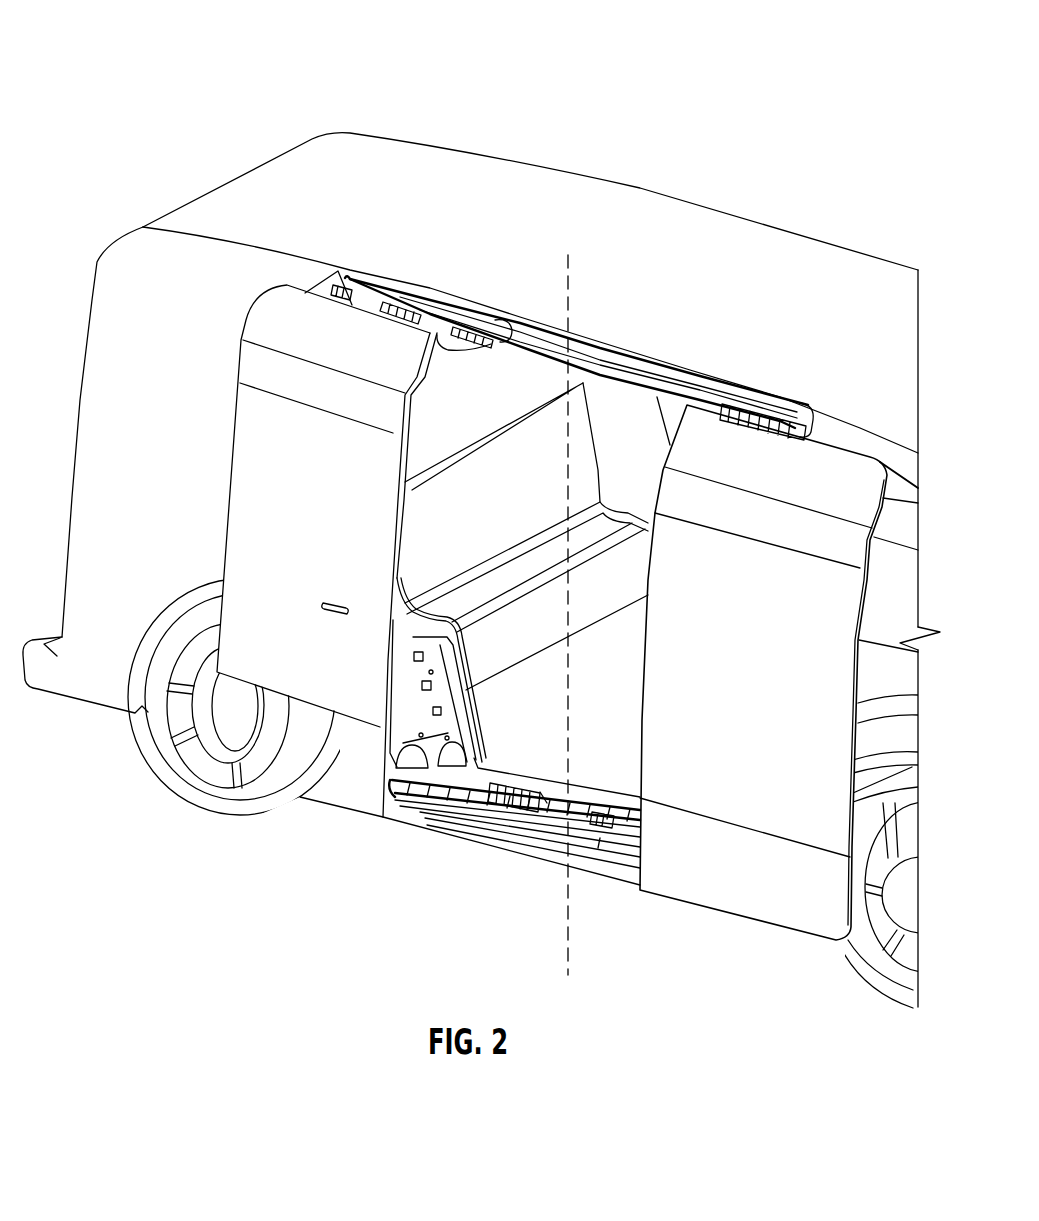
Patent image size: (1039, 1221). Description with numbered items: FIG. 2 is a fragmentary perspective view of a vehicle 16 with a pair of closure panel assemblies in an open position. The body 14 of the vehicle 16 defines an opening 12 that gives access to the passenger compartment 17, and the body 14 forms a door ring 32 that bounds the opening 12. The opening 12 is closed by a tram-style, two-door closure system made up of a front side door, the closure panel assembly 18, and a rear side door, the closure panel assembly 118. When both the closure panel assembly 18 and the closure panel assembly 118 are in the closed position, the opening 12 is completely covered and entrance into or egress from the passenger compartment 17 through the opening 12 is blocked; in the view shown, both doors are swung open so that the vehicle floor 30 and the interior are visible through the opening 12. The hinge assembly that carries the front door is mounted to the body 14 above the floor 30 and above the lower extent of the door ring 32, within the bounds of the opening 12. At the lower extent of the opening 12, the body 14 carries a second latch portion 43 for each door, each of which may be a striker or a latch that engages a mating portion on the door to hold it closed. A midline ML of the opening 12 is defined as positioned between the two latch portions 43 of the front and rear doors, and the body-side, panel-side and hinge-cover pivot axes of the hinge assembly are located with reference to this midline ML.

The opening 12 is at (631, 681).
The body 14 is at (385, 755).
The vehicle 16 is at (224, 85).
The passenger compartment 17 is at (527, 758).
The closure panel assembly 18 is at (767, 893).
The vehicle floor 30 is at (617, 643).
The door ring 32 is at (507, 330).
The second latch portion 43 is at (545, 800).
The closure panel assembly 118 is at (319, 778).
The midline ML is at (566, 953).